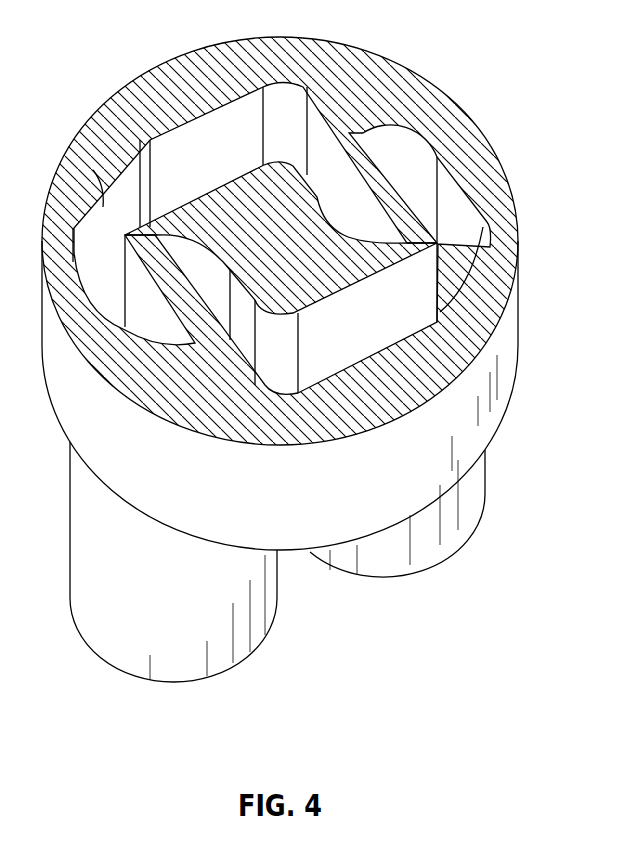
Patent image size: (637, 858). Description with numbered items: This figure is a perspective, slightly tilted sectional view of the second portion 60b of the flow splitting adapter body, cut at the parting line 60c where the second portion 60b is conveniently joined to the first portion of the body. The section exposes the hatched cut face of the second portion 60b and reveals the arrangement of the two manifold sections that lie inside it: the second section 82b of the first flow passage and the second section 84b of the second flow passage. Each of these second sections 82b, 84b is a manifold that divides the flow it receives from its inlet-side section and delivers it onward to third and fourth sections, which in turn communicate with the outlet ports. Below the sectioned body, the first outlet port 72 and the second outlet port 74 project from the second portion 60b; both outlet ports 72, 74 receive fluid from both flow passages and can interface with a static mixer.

The second portion 60b is at (520, 347).
The parting line 60c is at (500, 243).
The first outlet port 72 is at (193, 680).
The second outlet port 74 is at (390, 580).
The second section of first flow passage 82b is at (100, 183).
The second section of second flow passage 84b is at (397, 147).